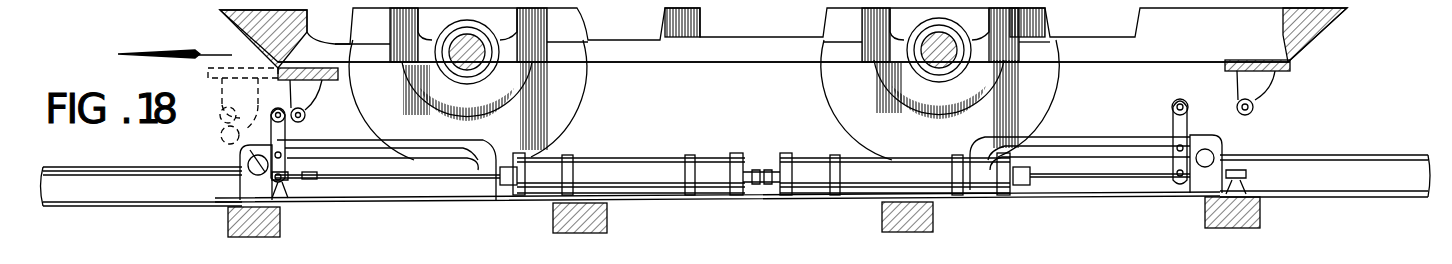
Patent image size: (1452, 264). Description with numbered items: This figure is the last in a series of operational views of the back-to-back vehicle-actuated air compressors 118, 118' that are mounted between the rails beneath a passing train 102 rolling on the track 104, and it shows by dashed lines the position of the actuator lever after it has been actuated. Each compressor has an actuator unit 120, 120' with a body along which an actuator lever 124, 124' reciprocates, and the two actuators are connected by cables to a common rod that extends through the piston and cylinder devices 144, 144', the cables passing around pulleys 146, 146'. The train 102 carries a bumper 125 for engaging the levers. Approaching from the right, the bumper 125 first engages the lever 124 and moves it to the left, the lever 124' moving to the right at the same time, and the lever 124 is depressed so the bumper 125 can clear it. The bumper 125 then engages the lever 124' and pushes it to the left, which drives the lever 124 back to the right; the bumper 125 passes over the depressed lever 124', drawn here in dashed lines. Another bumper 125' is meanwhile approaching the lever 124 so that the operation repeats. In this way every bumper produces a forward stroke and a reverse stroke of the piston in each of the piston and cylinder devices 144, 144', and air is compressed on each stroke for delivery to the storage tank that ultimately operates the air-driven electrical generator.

The train 102 is at (238, 32).
The track 104 is at (1351, 156).
The vehicle-actuated air compressor 118 is at (1082, 101).
The vehicle-actuated air compressor 118' is at (624, 123).
The actuator unit 120 is at (1080, 147).
The actuator unit 120' is at (386, 154).
The actuator lever 124 is at (710, 149).
The actuator lever 124' is at (315, 145).
The bumper 125 is at (304, 106).
The bumper 125' is at (1283, 93).
The piston and cylinder device 144 is at (895, 152).
The piston and cylinder device 144' is at (646, 152).
The pulley 146 is at (1158, 179).
The pulley 146' is at (353, 182).